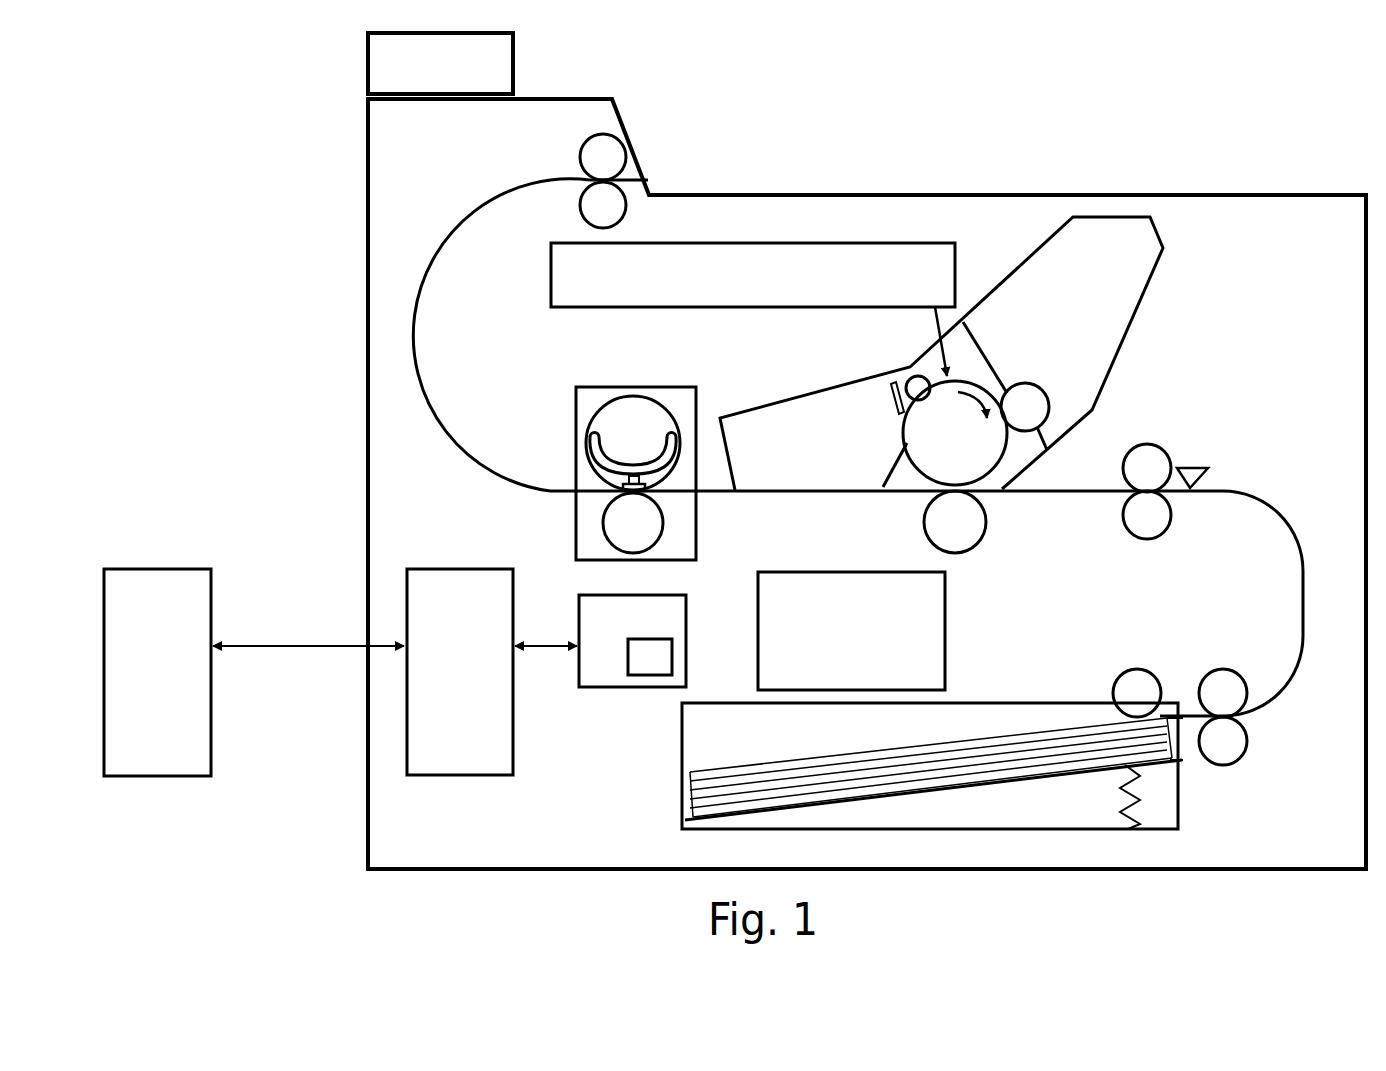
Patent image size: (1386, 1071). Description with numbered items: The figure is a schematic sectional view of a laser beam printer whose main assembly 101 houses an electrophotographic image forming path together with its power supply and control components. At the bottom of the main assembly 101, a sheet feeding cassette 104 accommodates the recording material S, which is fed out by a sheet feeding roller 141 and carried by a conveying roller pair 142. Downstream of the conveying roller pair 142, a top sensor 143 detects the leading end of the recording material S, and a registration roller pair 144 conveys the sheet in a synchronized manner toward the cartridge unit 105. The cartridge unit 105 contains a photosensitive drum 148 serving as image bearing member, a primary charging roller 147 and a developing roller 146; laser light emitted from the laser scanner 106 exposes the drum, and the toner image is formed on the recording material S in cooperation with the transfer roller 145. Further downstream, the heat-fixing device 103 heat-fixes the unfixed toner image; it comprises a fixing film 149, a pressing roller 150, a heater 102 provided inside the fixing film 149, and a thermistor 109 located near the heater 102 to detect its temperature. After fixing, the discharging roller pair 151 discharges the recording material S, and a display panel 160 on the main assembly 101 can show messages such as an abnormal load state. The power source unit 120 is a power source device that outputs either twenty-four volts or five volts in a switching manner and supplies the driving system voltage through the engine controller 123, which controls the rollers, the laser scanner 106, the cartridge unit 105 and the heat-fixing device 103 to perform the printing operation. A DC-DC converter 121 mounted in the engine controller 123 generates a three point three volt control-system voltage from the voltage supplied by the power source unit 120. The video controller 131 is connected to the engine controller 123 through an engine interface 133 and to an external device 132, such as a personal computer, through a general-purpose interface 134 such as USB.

The laser beam printer main assembly 101 is at (1252, 194).
The heater 102 is at (598, 479).
The heat-fixing device 103 is at (603, 387).
The sheet feeding cassette 104 is at (683, 788).
The cartridge unit 105 is at (1037, 248).
The laser scanner 106 is at (825, 243).
The thermistor 109 is at (636, 476).
The power source unit 120 is at (759, 572).
The DC-DC converter 121 is at (643, 636).
The engine controller 123 is at (625, 688).
The video controller 131 is at (440, 778).
The external device 132 is at (165, 569).
The engine interface 133 is at (542, 640).
The general-purpose interface 134 is at (300, 646).
The sheet feeding roller 141 is at (1117, 678).
The conveying roller pair 142 is at (1242, 680).
The top sensor 143 is at (1209, 465).
The registration roller pair 144 is at (1147, 540).
The transfer roller 145 is at (980, 538).
The developing roller 146 is at (1025, 383).
The primary charging roller 147 is at (913, 376).
The photosensitive drum 148 is at (903, 425).
The fixing film 149 is at (600, 410).
The pressing roller 150 is at (603, 524).
The discharging roller pair 151 is at (608, 133).
The display panel 160 is at (387, 59).
The recording material S is at (760, 760).